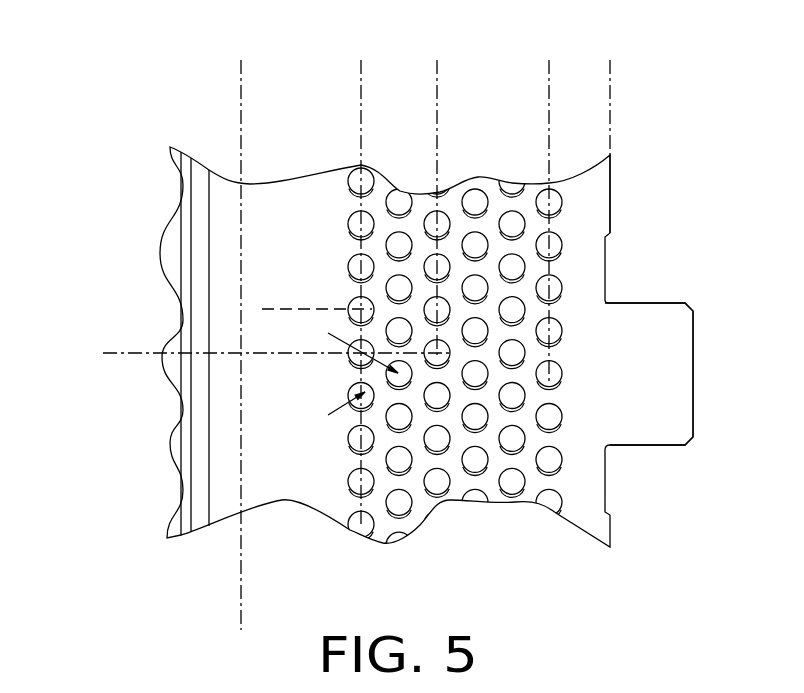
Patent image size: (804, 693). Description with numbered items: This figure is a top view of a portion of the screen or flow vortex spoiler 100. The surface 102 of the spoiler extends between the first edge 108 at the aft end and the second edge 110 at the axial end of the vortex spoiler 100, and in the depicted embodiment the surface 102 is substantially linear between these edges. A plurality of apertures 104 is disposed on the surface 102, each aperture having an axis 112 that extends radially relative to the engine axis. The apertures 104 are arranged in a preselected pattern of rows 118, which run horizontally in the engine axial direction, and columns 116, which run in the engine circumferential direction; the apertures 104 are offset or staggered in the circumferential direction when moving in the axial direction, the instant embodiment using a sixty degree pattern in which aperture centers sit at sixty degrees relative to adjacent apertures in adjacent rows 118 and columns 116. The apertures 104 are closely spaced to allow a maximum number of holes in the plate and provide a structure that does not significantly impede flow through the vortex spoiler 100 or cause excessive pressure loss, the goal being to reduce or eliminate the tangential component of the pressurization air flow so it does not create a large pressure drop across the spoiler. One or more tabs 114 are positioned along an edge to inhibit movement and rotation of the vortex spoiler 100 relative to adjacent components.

The flow vortex spoiler 100 is at (563, 102).
The first surface 102 is at (388, 182).
The apertures 104 is at (438, 216).
The first edge 108 is at (612, 192).
The second edge 110 is at (240, 325).
The axis 112 is at (494, 373).
The tab 114 is at (652, 325).
The columns 116 is at (360, 72).
The rows 118 is at (137, 353).